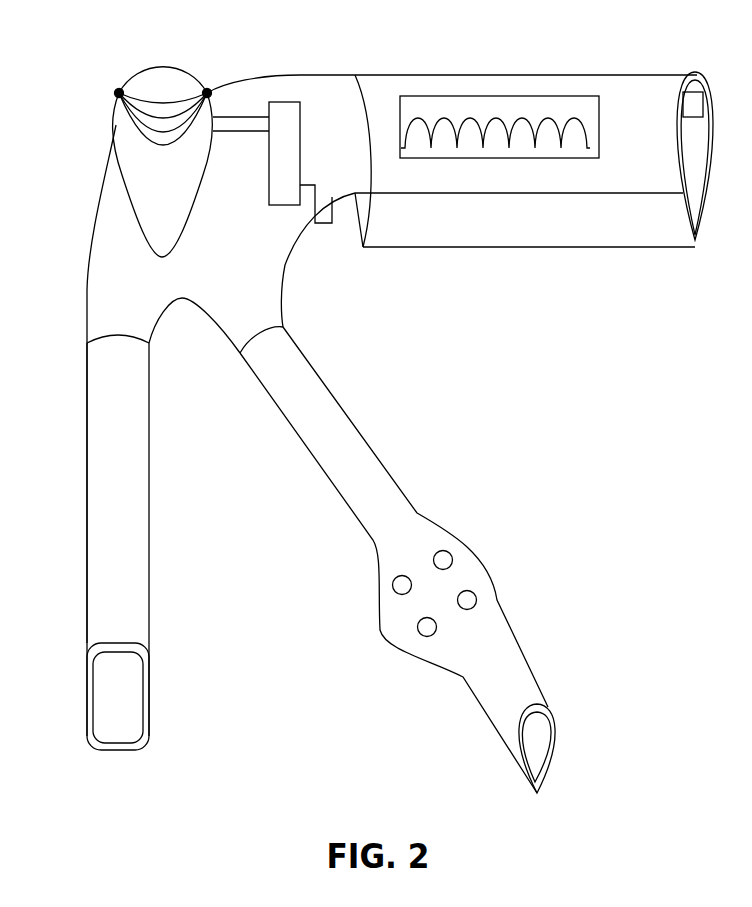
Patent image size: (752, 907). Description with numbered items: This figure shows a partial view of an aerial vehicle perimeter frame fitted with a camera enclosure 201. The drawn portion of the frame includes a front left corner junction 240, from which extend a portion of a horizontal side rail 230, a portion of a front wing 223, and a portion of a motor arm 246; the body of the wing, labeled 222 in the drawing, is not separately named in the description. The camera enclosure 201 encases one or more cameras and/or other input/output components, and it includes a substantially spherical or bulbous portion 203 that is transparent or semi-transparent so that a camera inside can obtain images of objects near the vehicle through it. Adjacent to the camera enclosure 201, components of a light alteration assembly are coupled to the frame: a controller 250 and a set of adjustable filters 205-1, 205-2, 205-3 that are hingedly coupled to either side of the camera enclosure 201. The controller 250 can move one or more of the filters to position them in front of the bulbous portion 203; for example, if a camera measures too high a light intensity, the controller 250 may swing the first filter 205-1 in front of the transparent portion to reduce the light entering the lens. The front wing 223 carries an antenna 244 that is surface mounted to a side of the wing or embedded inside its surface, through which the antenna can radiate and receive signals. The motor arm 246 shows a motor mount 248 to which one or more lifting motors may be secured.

The camera enclosure 201 is at (208, 90).
The substantially spherical or bulbous portion 203 is at (158, 77).
The first filter 205-1 is at (135, 115).
The second filter 205-2 is at (145, 123).
The third filter 205-3 is at (160, 137).
The cylindrical body 222 is at (553, 227).
The front wing 223 is at (648, 102).
The horizontal side rail 230 is at (95, 455).
The front left corner junction 240 is at (103, 230).
The antenna 244 is at (560, 102).
The motor arm 246 is at (372, 483).
The motor mount 248 is at (485, 587).
The controller 250 is at (290, 190).